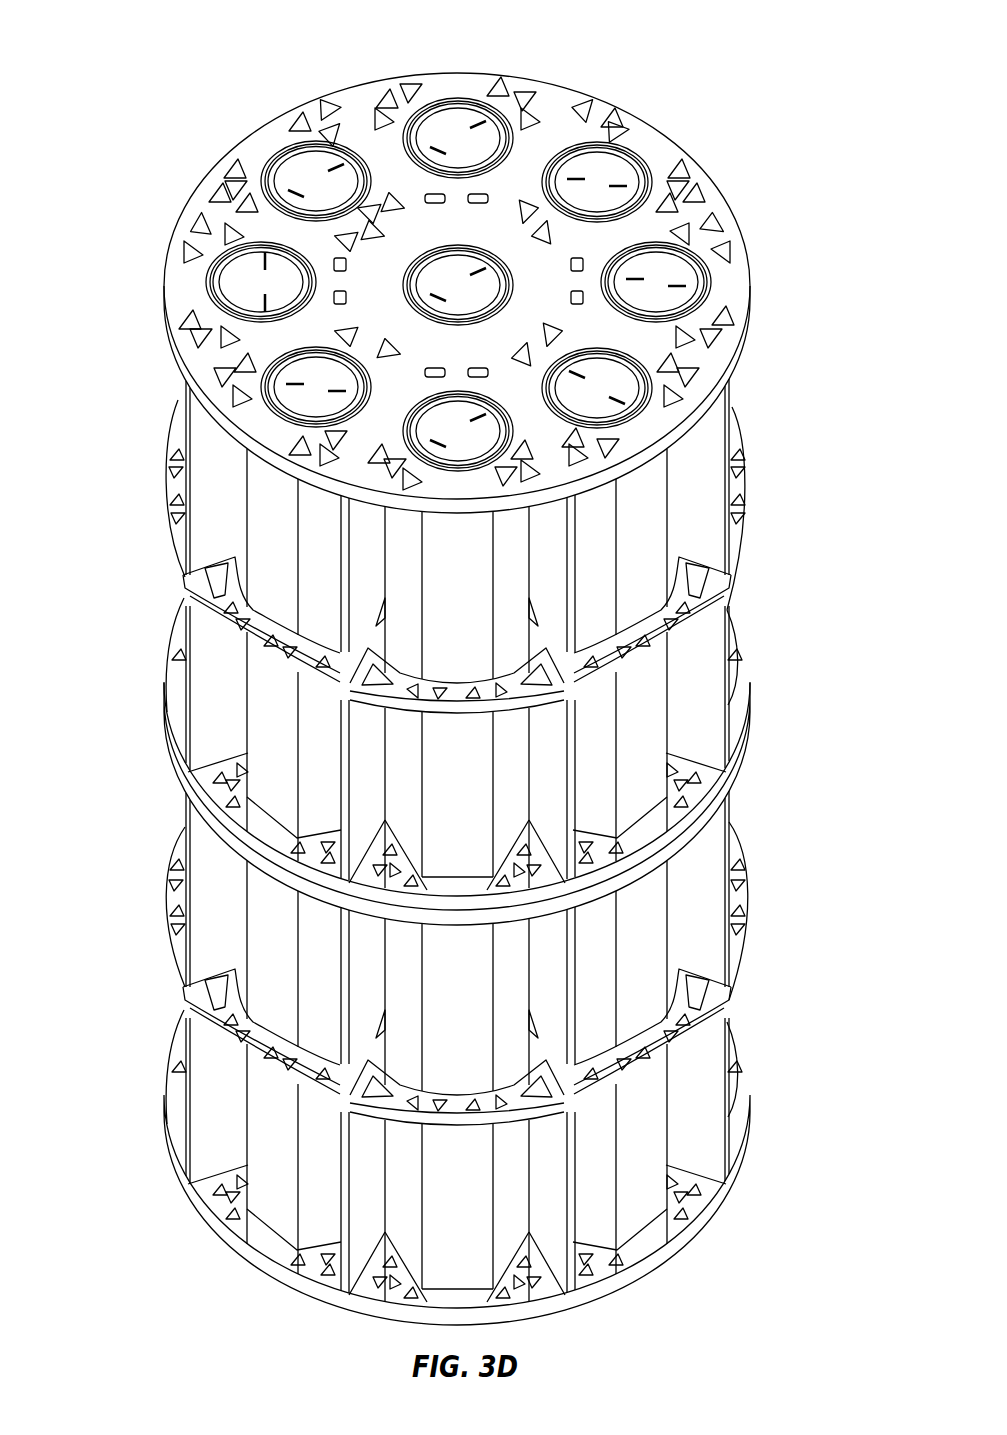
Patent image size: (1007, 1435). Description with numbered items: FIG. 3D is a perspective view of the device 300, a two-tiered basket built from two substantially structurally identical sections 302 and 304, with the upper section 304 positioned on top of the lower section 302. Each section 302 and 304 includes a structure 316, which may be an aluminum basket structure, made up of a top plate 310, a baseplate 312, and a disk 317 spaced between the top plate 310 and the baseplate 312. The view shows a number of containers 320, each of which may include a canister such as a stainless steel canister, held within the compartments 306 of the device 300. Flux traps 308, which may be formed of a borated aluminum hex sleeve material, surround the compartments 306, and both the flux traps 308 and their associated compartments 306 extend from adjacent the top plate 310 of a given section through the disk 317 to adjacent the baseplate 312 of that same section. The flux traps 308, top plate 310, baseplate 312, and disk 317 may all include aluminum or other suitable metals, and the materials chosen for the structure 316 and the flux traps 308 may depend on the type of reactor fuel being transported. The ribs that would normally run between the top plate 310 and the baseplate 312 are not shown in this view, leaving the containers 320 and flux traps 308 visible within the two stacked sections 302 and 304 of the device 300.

The device 300 is at (771, 44).
The section 302 is at (132, 597).
The section 304 is at (132, 1008).
The compartments 306 is at (693, 432).
The flux traps 308 is at (515, 1040).
The top plate 310 is at (460, 472).
The baseplate 312 is at (727, 1193).
The structure 316 is at (740, 1093).
The disk 317 is at (207, 1004).
The containers 320 is at (312, 390).